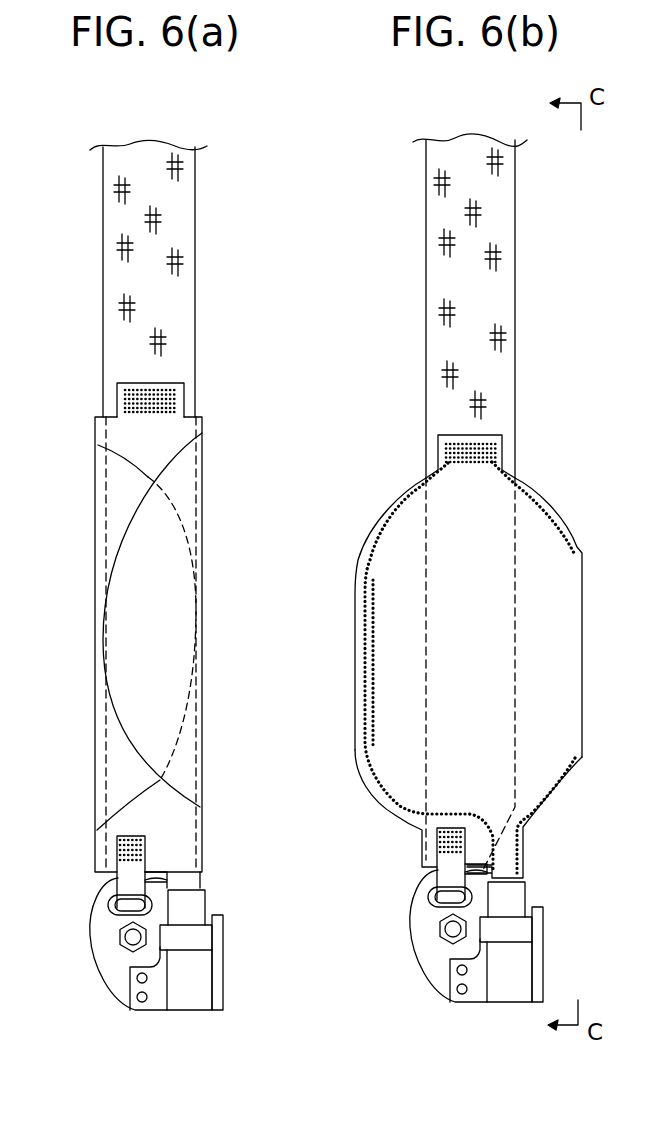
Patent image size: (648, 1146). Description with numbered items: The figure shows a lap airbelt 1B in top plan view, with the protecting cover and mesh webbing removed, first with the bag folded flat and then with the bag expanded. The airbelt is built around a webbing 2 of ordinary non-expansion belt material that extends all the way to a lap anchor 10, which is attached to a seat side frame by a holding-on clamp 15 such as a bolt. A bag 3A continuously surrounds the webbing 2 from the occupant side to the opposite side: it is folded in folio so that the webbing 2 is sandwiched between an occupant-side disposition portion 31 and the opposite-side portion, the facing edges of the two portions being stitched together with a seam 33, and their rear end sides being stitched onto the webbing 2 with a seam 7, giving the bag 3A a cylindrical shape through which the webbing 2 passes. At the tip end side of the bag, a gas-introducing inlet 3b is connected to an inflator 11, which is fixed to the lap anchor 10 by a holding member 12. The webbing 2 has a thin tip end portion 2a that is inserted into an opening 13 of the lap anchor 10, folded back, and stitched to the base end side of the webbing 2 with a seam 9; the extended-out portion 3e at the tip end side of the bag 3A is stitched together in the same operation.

In FIG. 6A, the lap airbelt 1B is at (207, 193).
In FIG. 6B, the lap airbelt 1B is at (535, 208).
In FIG. 6A, the webbing 2 is at (188, 283).
In FIG. 6B, the webbing 2 is at (508, 275).
In FIG. 6A, the seam 7 is at (174, 392).
In FIG. 6B, the seam 7 is at (493, 443).
In FIG. 6A, the bag 3A is at (183, 733).
In FIG. 6B, the bag 3A is at (400, 538).
In FIG. 6A, the extended-out portion 3e is at (98, 870).
In FIG. 6B, the extended-out portion 3e is at (422, 843).
In FIG. 6B, the gas-introducing inlet 3b is at (510, 852).
In FIG. 6A, the tip end portion 2a is at (122, 880).
In FIG. 6B, the tip end portion 2a is at (419, 865).
In FIG. 6A, the seam 9 is at (135, 838).
In FIG. 6B, the seam 9 is at (456, 834).
In FIG. 6A, the lap anchor 10 is at (118, 983).
In FIG. 6B, the lap anchor 10 is at (430, 942).
In FIG. 6A, the inflator 11 is at (197, 907).
In FIG. 6B, the inflator 11 is at (537, 889).
In FIG. 6A, the holding member 12 is at (200, 937).
In FIG. 6B, the holding member 12 is at (542, 954).
In FIG. 6A, the opening 13 is at (128, 912).
In FIG. 6B, the opening 13 is at (412, 907).
In FIG. 6A, the holding-on clamp 15 is at (128, 950).
In FIG. 6B, the holding-on clamp 15 is at (414, 938).
In FIG. 6B, the occupant-side disposition portion 31 is at (533, 532).
In FIG. 6B, the seam 33 is at (367, 592).